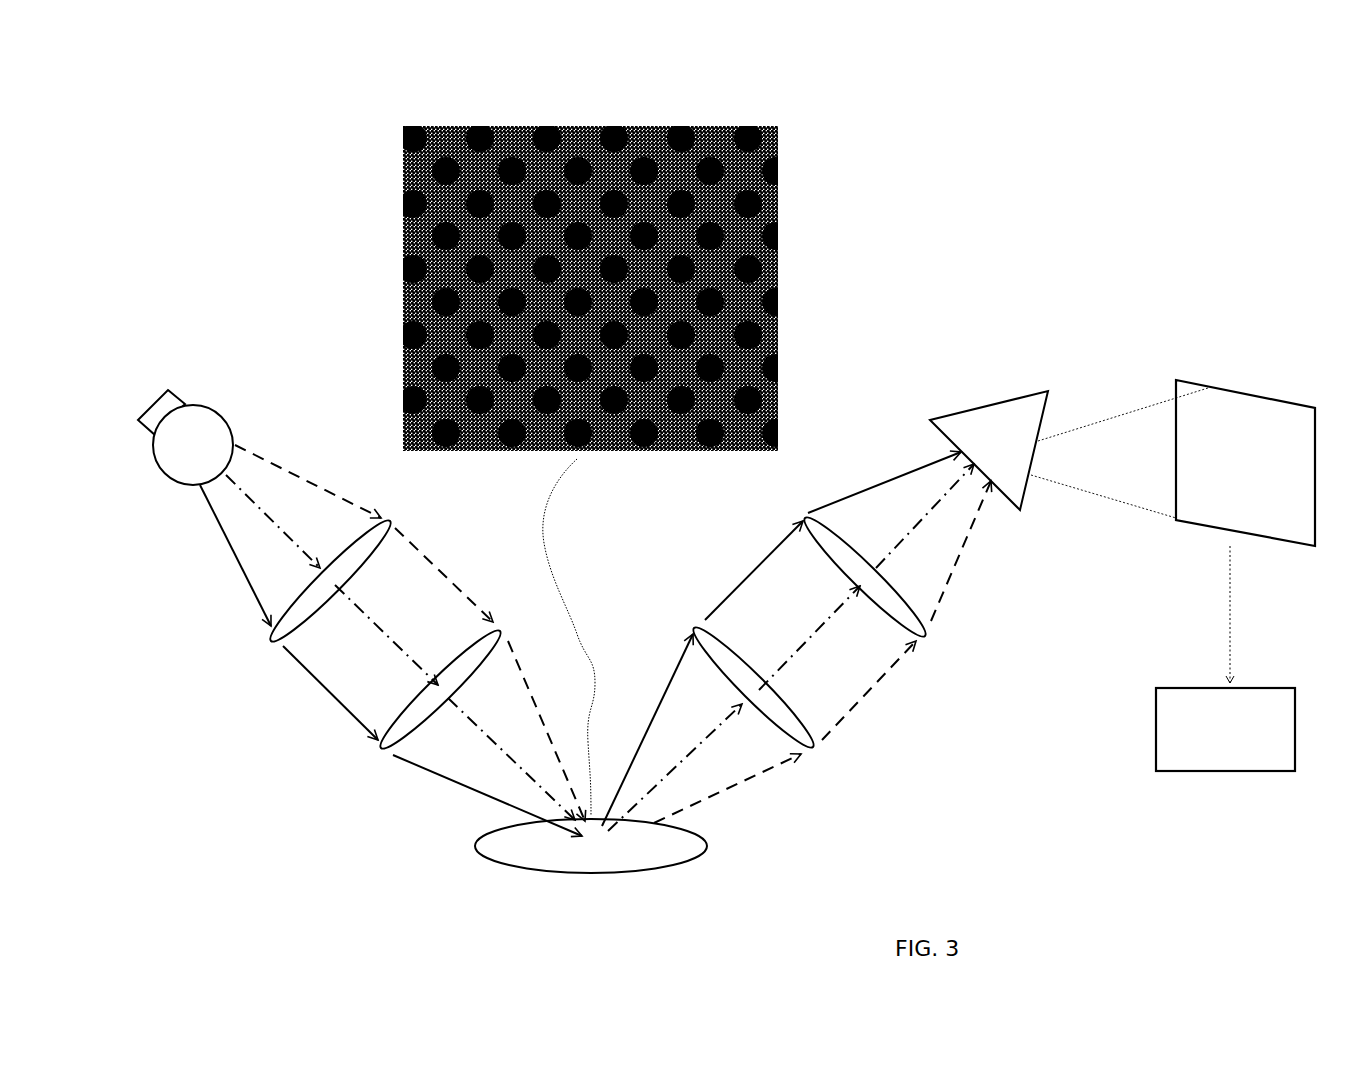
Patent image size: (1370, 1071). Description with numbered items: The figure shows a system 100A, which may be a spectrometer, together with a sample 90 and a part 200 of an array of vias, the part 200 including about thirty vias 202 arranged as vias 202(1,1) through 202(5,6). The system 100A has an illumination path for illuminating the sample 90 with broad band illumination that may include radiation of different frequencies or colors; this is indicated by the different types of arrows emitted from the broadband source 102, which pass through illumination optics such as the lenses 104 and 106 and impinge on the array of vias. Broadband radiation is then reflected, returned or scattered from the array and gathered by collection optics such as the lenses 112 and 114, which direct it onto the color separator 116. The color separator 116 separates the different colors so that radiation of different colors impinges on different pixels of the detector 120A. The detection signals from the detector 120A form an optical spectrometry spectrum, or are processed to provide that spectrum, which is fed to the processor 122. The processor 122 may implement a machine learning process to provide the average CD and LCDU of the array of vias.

The sample 90 is at (595, 859).
The system 100A is at (726, 455).
The broadband source 102 is at (203, 448).
The lens 104 is at (262, 636).
The lens 106 is at (372, 742).
The lens 112 is at (806, 740).
The lens 114 is at (918, 629).
The color separator 116 is at (983, 425).
The detector 120A is at (1264, 467).
The processor 122 is at (1234, 734).
The part of an array of vias 200 is at (485, 244).
The vias 202 is at (395, 192).